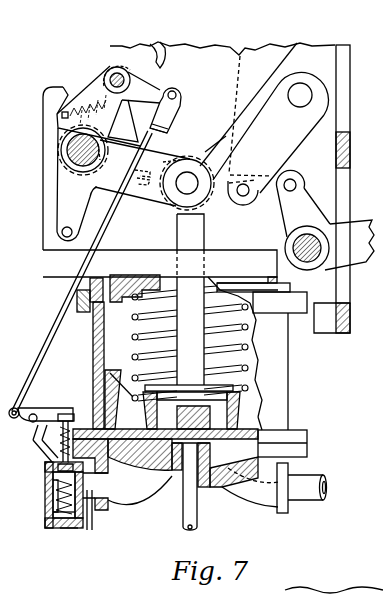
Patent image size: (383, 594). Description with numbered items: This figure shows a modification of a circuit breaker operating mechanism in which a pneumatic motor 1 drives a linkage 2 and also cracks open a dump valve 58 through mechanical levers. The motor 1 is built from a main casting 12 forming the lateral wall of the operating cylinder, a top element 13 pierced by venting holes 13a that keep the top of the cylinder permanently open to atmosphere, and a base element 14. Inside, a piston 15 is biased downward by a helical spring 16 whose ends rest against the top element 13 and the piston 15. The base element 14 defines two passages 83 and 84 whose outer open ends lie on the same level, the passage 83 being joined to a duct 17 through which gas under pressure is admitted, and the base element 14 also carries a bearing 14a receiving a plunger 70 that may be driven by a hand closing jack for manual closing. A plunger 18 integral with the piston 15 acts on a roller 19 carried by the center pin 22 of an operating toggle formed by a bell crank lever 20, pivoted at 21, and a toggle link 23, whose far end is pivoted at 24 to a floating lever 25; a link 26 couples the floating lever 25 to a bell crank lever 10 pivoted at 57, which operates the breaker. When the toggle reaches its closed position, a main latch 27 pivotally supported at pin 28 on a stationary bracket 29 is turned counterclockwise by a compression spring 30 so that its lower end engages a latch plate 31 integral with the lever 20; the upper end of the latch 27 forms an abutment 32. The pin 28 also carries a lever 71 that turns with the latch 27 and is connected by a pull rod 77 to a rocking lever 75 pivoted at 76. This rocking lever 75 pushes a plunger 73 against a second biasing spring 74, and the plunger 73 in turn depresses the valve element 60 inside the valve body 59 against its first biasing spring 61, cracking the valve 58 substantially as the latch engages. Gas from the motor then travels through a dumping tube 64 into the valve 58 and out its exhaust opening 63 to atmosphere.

The motor 1 is at (81, 365).
The linkage 2 is at (239, 42).
The bell crank lever 10 is at (364, 251).
The main casting 12 is at (93, 377).
The top element 13 is at (278, 303).
The venting holes 13a is at (106, 282).
The base element 14 is at (305, 446).
The bearing 14a is at (172, 455).
The piston 15 is at (108, 371).
The helical spring 16 is at (132, 310).
The duct 17 is at (311, 498).
The plunger 18 is at (176, 230).
The roller 19 is at (205, 190).
The bell crank lever 20 is at (62, 212).
The pivot 21 is at (58, 154).
The pin 22 is at (196, 172).
The toggle link 23 is at (225, 132).
The pivot 24 is at (298, 108).
The floating lever 25 is at (287, 52).
The link 26 is at (262, 197).
The main latch 27 is at (125, 131).
The pin 28 is at (117, 67).
The stationary bracket 29 is at (66, 86).
The compression spring 30 is at (84, 74).
The latch plate 31 is at (139, 169).
The abutment 32 is at (158, 43).
The pivot 57 is at (321, 244).
The dump valve 58 is at (38, 481).
The valve body 59 is at (69, 524).
The valve element 60 is at (48, 503).
The helical spring 61 is at (45, 522).
The exhaust opening 63 is at (45, 490).
The dumping tube 64 is at (92, 515).
The plunger 70 is at (183, 518).
The lever 71 is at (165, 88).
The plunger 73 is at (72, 418).
The second biasing spring 74 is at (43, 455).
The rocking lever 75 is at (55, 416).
The pivot 76 is at (16, 420).
The pull rod 77 is at (58, 318).
The passage 83 is at (131, 490).
The passage 84 is at (264, 498).